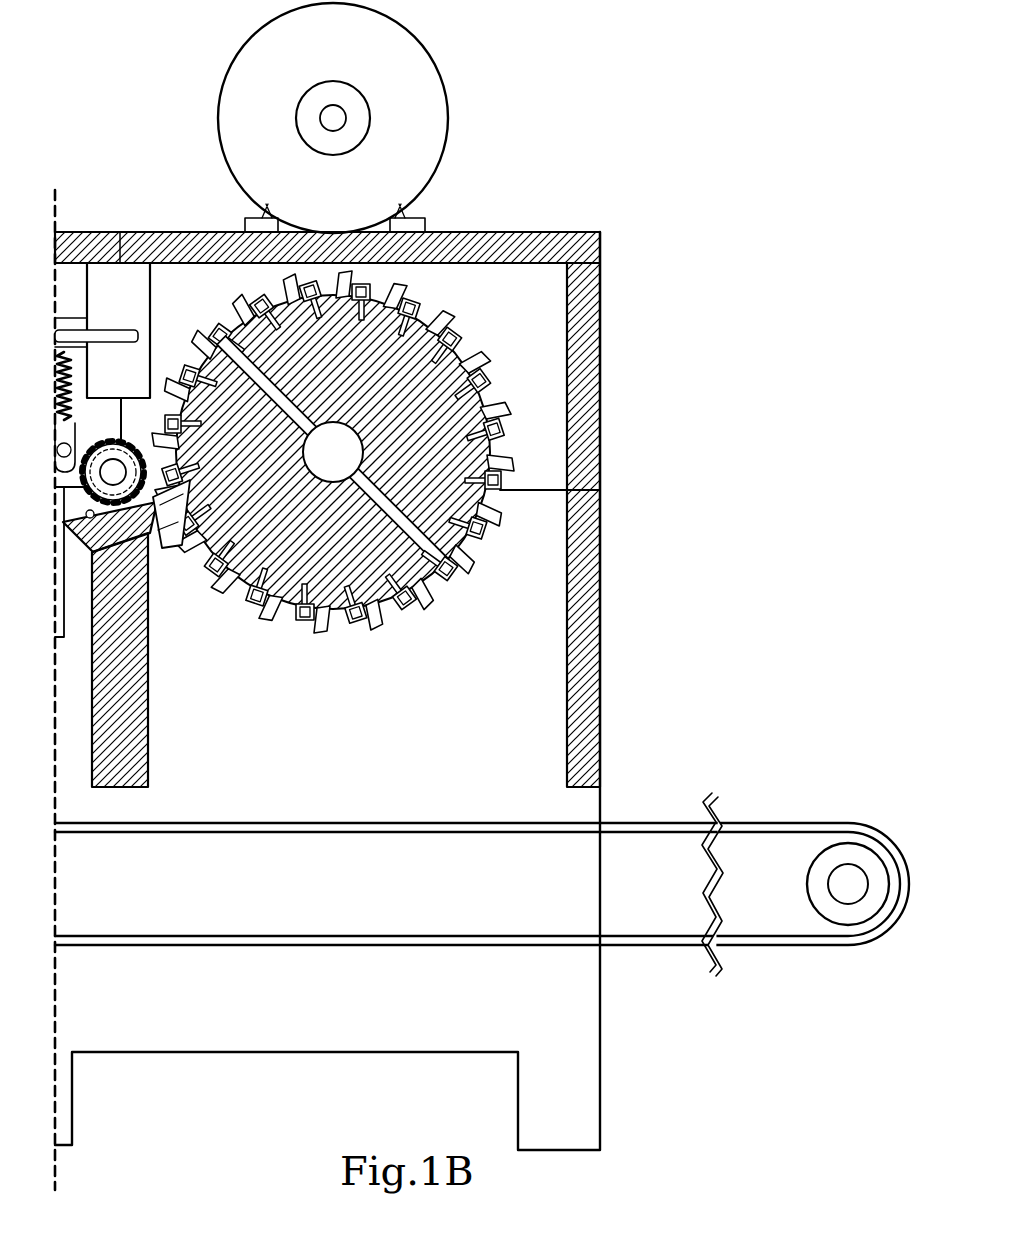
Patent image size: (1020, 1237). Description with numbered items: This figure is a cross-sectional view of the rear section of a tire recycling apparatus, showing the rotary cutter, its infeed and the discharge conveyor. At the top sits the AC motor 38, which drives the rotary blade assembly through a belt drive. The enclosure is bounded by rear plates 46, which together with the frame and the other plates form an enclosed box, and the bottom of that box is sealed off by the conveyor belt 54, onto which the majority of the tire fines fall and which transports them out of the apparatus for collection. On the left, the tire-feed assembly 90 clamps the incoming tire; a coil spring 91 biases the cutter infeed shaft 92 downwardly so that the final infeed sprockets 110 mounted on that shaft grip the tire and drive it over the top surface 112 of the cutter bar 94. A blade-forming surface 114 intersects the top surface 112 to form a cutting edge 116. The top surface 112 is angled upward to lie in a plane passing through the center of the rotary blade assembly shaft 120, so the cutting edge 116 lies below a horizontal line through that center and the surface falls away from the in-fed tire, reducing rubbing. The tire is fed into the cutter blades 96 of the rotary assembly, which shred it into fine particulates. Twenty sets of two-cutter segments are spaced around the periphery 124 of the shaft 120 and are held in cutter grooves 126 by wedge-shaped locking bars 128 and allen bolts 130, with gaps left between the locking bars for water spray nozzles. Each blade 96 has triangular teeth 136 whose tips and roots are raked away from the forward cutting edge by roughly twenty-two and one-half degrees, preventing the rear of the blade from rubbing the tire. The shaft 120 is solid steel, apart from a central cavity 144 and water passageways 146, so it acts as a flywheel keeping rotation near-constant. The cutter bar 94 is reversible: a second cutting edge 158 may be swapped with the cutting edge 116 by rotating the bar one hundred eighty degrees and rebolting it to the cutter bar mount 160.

The AC motor 38 is at (432, 56).
The rear plates 46 is at (602, 582).
The conveyor belt 54 is at (315, 936).
The tire-feed assembly 90 is at (72, 428).
The coil spring 91 is at (78, 374).
The cutter infeed shaft 92 is at (98, 445).
The cutter bar 94 is at (158, 548).
The cutter blades 96 is at (493, 412).
The final infeed sprockets 110 is at (198, 422).
The top surface 112 is at (110, 546).
The blade-forming surface 114 is at (196, 500).
The cutting edge 116 is at (198, 460).
The rotary blade assembly shaft 120 is at (440, 585).
The periphery 124 is at (482, 548).
The cutter grooves 126 is at (495, 478).
The wedge-shaped locking bars 128 is at (478, 372).
The allen bolts 130 is at (490, 525).
The triangular teeth 136 is at (436, 305).
The central cavity 144 is at (341, 480).
The water passageways 146 is at (393, 392).
The second cutting edge 158 is at (70, 562).
The cutter bar mount 160 is at (150, 700).